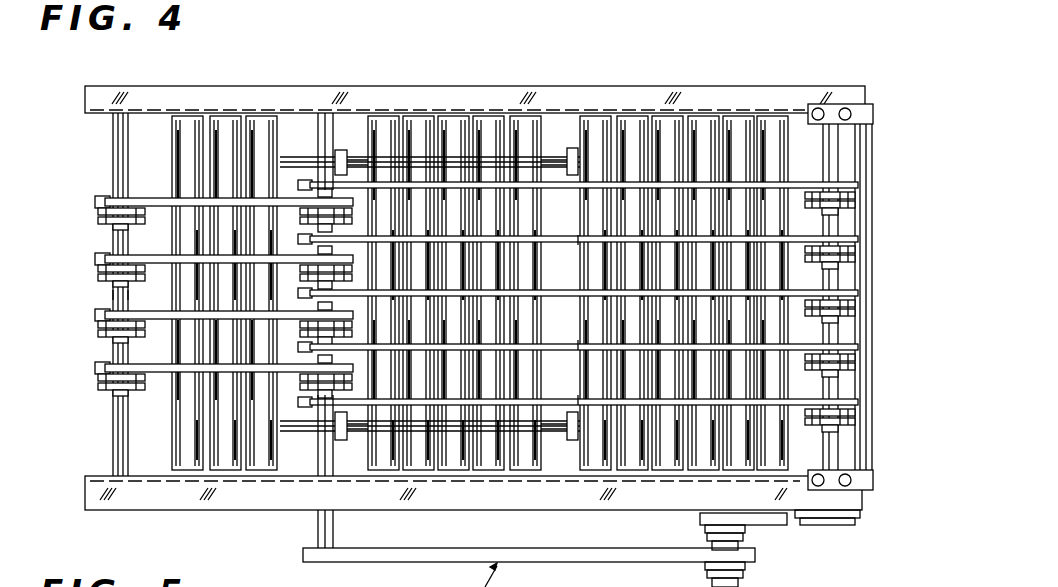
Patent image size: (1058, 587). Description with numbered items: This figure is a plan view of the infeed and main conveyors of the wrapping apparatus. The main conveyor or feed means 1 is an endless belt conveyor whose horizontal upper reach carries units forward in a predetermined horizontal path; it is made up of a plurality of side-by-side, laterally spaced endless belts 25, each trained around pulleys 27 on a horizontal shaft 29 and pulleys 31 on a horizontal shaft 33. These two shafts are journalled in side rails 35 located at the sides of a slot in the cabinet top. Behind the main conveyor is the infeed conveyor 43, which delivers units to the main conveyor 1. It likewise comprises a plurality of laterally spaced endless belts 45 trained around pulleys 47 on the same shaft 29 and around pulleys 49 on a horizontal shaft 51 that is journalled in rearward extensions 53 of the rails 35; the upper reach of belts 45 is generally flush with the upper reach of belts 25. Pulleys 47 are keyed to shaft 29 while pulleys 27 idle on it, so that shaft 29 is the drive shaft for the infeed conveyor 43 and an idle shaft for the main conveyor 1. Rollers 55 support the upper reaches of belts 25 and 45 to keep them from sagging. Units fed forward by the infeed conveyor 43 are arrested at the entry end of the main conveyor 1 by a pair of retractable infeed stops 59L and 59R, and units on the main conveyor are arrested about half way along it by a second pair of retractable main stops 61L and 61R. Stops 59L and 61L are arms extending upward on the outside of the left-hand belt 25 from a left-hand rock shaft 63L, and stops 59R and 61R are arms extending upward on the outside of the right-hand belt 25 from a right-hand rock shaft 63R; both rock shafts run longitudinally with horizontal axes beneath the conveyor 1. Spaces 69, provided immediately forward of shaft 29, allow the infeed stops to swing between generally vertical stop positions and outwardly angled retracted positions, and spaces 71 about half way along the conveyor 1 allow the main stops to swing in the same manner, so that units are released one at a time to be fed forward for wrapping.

The main conveyor 1 is at (567, 76).
The endless belts 25 is at (578, 240).
The pulleys 27 is at (298, 184).
The horizontal shaft 29 is at (318, 525).
The pulleys 31 is at (855, 190).
The horizontal shaft 33 is at (830, 455).
The side rails 35 is at (180, 86).
The infeed conveyor 43 is at (105, 297).
The endless belts 45 is at (95, 258).
The pulleys 47 is at (352, 206).
The pulleys 49 is at (100, 198).
The horizontal shaft 51 is at (118, 135).
The rearward extensions 53 is at (85, 99).
The rollers 55 is at (243, 120).
The left infeed stop 59L is at (345, 150).
The right infeed stop 59R is at (340, 442).
The left main stop 61L is at (575, 148).
The right main stop 61R is at (575, 442).
The left-hand rock shaft 63L is at (287, 157).
The right-hand rock shaft 63R is at (555, 432).
The spaces 69 is at (348, 165).
The spaces 71 is at (556, 139).